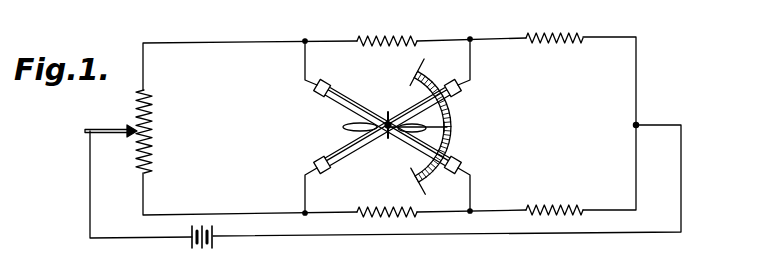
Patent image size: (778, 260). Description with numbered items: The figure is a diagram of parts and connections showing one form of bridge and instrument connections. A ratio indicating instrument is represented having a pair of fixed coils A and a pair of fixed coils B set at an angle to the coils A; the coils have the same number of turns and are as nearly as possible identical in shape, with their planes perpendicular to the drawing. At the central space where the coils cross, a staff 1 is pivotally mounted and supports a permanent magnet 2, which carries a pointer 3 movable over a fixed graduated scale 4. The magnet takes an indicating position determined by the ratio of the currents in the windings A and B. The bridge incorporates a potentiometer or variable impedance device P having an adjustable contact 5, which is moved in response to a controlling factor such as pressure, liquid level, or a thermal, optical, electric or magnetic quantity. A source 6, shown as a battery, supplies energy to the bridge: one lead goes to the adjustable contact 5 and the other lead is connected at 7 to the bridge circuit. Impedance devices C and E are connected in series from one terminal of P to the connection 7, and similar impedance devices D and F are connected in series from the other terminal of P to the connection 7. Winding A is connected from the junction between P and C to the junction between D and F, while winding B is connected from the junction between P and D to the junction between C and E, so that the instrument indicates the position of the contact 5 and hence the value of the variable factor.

The staff 1 is at (390, 118).
The permanent magnet 2 is at (346, 128).
The pointer 3 is at (456, 134).
The fixed graduated scale 4 is at (455, 120).
The adjustable contact 5 is at (128, 128).
The source 6 is at (208, 243).
The connection 7 is at (628, 127).
The fixed coils A is at (338, 97).
The fixed coils B is at (347, 152).
The impedance device C is at (387, 27).
The impedance device D is at (387, 200).
The impedance device E is at (554, 25).
The impedance device F is at (554, 199).
The potentiometer P is at (153, 131).